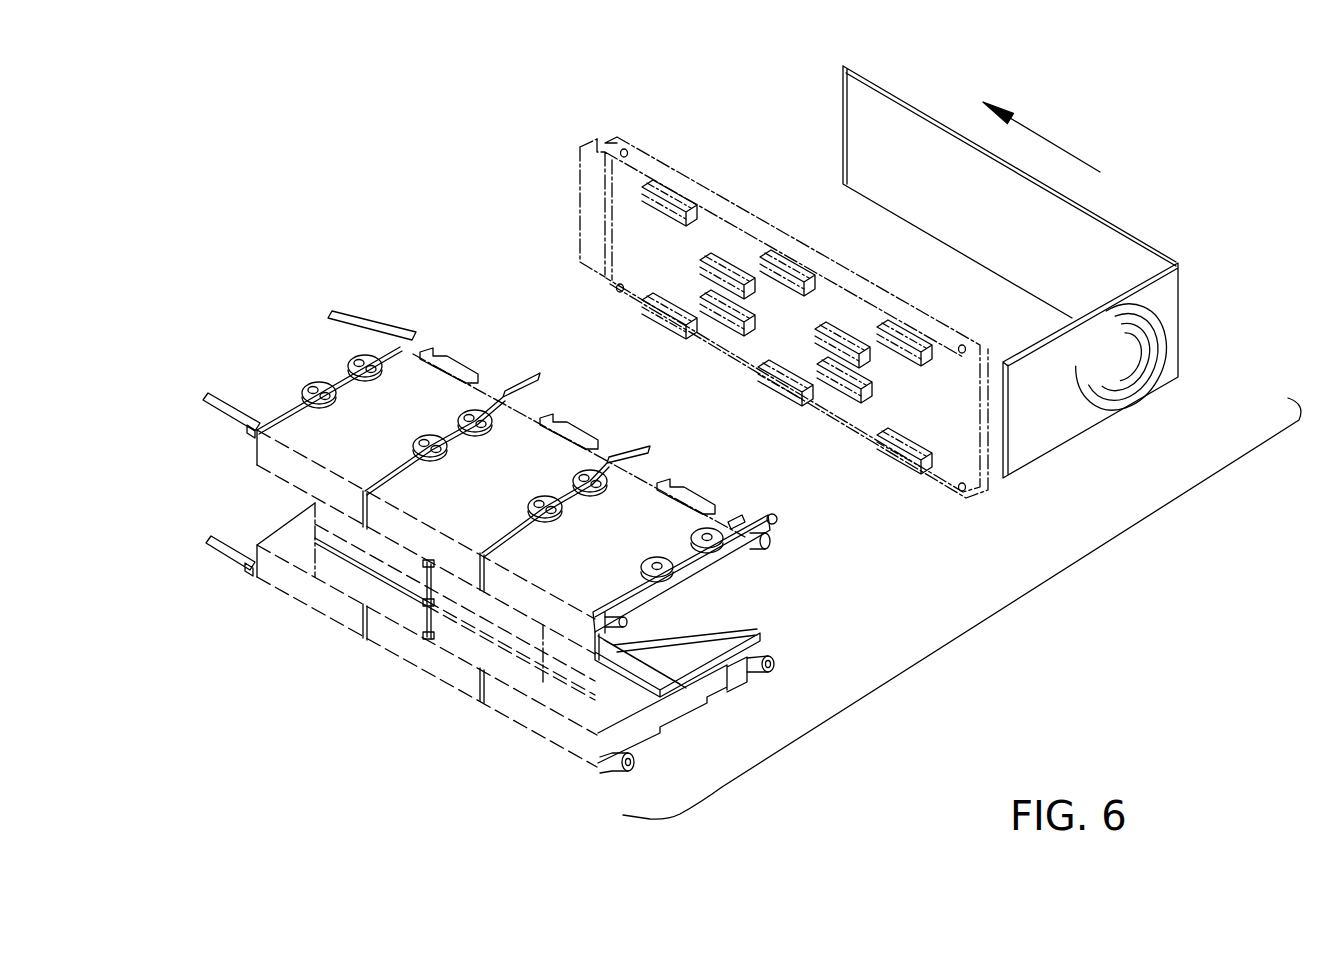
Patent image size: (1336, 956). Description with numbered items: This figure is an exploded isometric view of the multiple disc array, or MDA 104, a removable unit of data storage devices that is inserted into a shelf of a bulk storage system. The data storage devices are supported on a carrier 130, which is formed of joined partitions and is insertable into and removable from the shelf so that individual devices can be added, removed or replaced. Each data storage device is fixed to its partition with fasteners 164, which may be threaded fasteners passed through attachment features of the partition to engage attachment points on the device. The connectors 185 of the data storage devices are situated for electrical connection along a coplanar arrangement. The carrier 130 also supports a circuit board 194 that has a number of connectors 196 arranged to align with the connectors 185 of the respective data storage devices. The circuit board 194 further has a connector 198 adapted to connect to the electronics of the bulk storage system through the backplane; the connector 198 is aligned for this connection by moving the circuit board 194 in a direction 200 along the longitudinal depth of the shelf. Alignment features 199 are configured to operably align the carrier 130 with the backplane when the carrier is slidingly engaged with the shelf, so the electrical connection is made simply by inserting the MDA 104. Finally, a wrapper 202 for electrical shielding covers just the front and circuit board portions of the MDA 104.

The MDA 104 is at (962, 627).
The carrier 130 is at (293, 352).
The fastener 164 is at (420, 448).
The connectors of the data storage devices 185 is at (463, 367).
The circuit board 194 is at (675, 167).
The connectors 196 is at (713, 257).
The connector 198 is at (583, 146).
The alignment features 199 is at (364, 322).
The direction 200 is at (1040, 141).
The wrapper 202 is at (1163, 252).